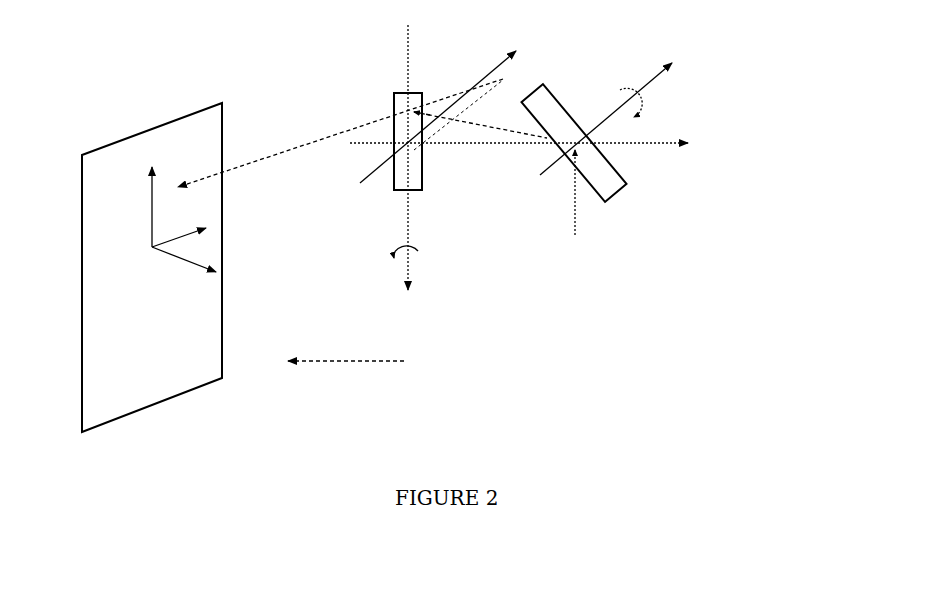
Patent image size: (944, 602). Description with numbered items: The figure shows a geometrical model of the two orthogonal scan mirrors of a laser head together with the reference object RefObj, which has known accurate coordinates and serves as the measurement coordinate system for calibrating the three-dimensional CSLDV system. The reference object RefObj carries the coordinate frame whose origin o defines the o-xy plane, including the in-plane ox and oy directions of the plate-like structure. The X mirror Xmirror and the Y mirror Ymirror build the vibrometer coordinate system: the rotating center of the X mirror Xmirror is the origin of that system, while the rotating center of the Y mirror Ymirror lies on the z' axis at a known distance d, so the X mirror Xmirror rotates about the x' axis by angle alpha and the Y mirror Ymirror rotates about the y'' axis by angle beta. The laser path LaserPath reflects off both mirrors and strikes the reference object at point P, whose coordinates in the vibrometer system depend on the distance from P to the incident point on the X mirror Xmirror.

The reference object RefObj is at (152, 267).
The origin of the measurement coordinate system o is at (175, 224).
The point P is at (337, 147).
The X mirror Xmirror is at (531, 167).
The Y mirror Ymirror is at (628, 144).
The laser path LaserPath is at (414, 360).